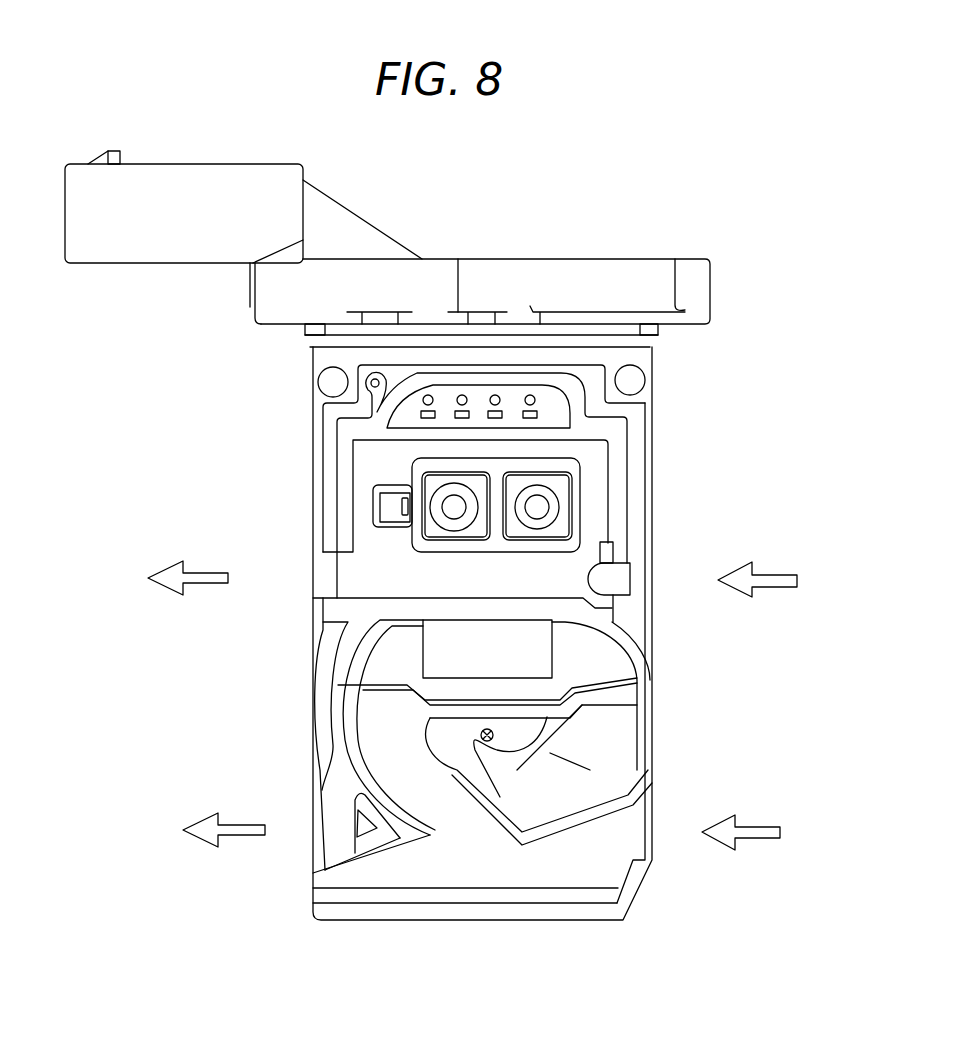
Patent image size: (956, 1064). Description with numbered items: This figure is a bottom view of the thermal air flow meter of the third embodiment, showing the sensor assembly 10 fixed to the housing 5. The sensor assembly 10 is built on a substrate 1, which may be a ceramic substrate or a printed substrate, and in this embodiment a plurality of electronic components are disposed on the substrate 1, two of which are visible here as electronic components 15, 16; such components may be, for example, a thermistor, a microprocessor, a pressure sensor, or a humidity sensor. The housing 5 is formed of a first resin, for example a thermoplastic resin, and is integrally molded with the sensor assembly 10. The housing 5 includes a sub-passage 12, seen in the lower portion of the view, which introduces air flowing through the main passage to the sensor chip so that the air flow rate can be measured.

The substrate 1 is at (603, 452).
The sensor assembly 10 is at (600, 500).
The electronic component 15 is at (557, 525).
The electronic component 16 is at (395, 508).
The housing 5 is at (587, 770).
The sub-passage 12 is at (530, 870).